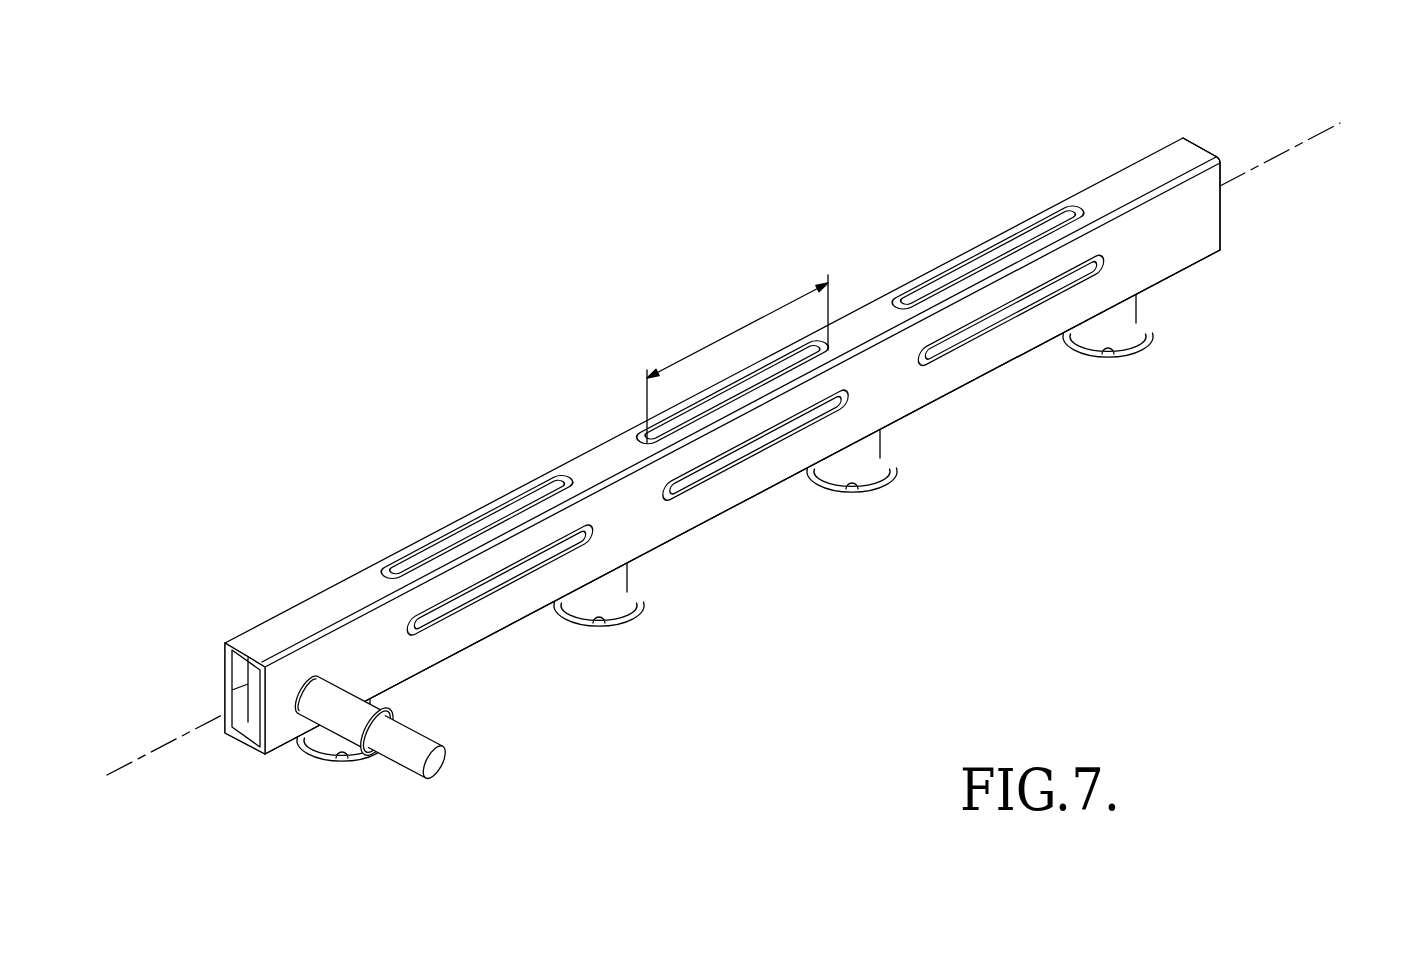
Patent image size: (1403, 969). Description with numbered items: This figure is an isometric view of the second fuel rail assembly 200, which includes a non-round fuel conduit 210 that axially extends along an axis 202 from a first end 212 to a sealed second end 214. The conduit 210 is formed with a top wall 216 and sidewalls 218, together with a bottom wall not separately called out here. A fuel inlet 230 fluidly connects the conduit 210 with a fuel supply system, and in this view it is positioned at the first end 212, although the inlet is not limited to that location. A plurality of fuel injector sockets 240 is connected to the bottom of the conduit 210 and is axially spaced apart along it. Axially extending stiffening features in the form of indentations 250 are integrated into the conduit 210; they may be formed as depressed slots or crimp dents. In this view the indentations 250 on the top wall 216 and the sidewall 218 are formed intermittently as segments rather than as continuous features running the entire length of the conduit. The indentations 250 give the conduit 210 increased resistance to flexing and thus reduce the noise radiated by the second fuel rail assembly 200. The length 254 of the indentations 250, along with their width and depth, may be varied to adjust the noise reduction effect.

The second fuel rail assembly 200 is at (754, 438).
The axis 202 is at (1323, 130).
The non-round fuel conduit 210 is at (1176, 150).
The first end 212 is at (247, 684).
The sealed second end 214 is at (1211, 152).
The top wall 216 is at (257, 635).
The sidewall 218 is at (1208, 232).
The fuel inlet 230 is at (395, 757).
The fuel injector sockets 240 is at (615, 597).
The indentations 250 is at (1012, 247).
The length 254 is at (795, 301).